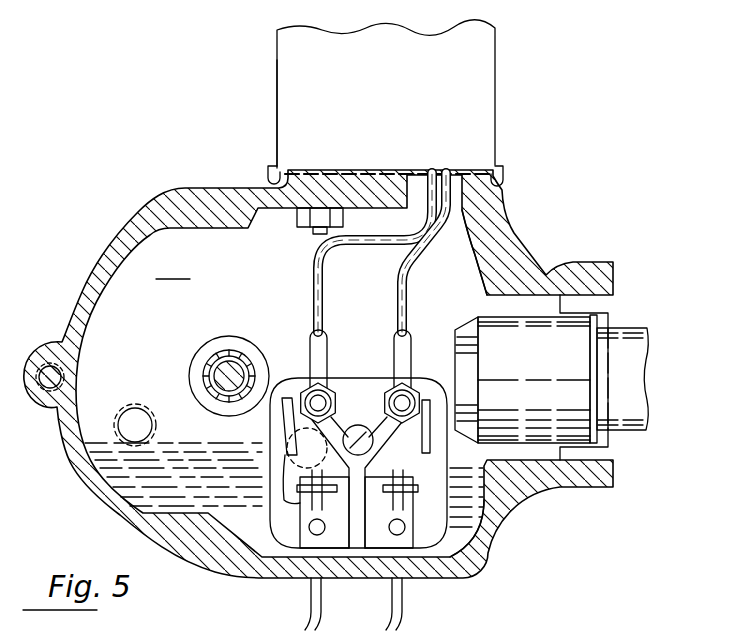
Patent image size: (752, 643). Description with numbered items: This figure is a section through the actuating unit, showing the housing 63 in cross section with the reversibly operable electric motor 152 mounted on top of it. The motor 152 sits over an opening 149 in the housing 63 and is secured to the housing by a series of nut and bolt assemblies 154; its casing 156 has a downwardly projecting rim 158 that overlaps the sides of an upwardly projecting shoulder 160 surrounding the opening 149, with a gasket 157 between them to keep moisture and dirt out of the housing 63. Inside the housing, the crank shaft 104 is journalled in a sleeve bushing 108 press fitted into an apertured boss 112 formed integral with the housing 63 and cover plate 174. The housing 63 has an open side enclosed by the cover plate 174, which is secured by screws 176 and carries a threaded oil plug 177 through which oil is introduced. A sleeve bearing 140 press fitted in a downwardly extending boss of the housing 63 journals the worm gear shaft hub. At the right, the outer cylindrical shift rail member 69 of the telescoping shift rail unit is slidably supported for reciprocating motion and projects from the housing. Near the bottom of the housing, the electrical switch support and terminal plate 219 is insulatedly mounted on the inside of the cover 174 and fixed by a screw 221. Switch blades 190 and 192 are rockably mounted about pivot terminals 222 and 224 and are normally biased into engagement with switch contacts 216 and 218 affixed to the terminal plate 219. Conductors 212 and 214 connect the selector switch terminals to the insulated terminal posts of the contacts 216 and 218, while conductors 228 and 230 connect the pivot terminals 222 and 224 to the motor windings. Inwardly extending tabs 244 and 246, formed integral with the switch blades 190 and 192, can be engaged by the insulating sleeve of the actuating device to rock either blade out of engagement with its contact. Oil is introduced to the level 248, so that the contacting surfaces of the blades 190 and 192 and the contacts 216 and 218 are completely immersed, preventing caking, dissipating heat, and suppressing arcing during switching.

The housing 63 is at (72, 291).
The outer cylindrical shift rail member 69 is at (640, 367).
The crank shaft 104 is at (228, 362).
The sleeve bushing 108 is at (212, 362).
The apertured boss 112 is at (199, 363).
The sleeve bearing 140 is at (432, 540).
The opening 149 is at (460, 214).
The reversibly operable electric motor 152 is at (273, 91).
The nut and bolt assemblies 154 is at (312, 231).
The casing 156 is at (288, 133).
The gasket 157 is at (379, 171).
The downwardly projecting rim 158 is at (266, 174).
The upwardly projecting shoulder 160 is at (505, 171).
The cover plate 174 is at (173, 269).
The screws 176 is at (38, 391).
The oil plug 177 is at (134, 408).
The switch blade 190 is at (283, 493).
The switch blade 192 is at (418, 488).
The conductor 212 is at (322, 607).
The conductor 214 is at (402, 607).
The switch contact 216 is at (306, 538).
The switch contact 218 is at (408, 518).
The electrical switch support and terminal plate 219 is at (292, 378).
The screw 221 is at (357, 432).
The pivot terminal 222 is at (320, 398).
The pivot terminal 224 is at (404, 398).
The conductor 228 is at (328, 288).
The conductor 230 is at (409, 283).
The tab 244 is at (282, 438).
The tab 246 is at (431, 449).
The oil level 248 is at (197, 431).